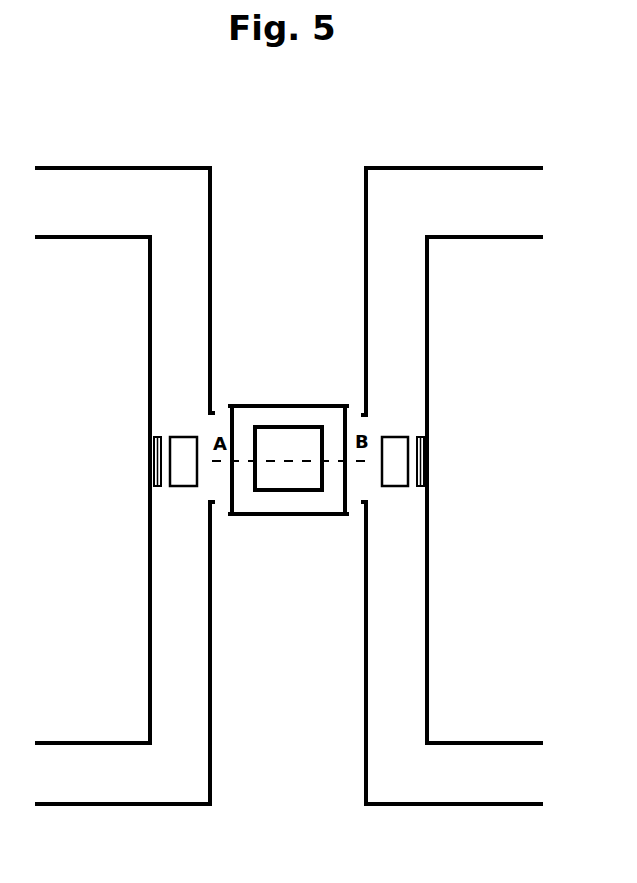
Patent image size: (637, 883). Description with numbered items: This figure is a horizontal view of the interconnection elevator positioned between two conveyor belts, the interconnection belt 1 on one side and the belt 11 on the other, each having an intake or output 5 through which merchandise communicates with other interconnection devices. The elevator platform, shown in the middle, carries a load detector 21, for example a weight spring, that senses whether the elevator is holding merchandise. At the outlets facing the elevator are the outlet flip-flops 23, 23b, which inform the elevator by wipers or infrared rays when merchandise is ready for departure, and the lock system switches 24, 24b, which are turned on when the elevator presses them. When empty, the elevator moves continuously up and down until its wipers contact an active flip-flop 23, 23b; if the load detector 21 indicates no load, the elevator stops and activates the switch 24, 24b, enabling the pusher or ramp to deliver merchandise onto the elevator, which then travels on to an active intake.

The interconnection belt 1 is at (122, 486).
The belt 11 is at (454, 486).
The intake/output for other interconnection devices 5 is at (150, 462).
The load detector 21 is at (288, 477).
The outlet flip-flop 23 is at (222, 515).
The outlet flip-flop 23b is at (354, 511).
The lock system switch 24 is at (222, 409).
The lock system switch 24b is at (357, 407).